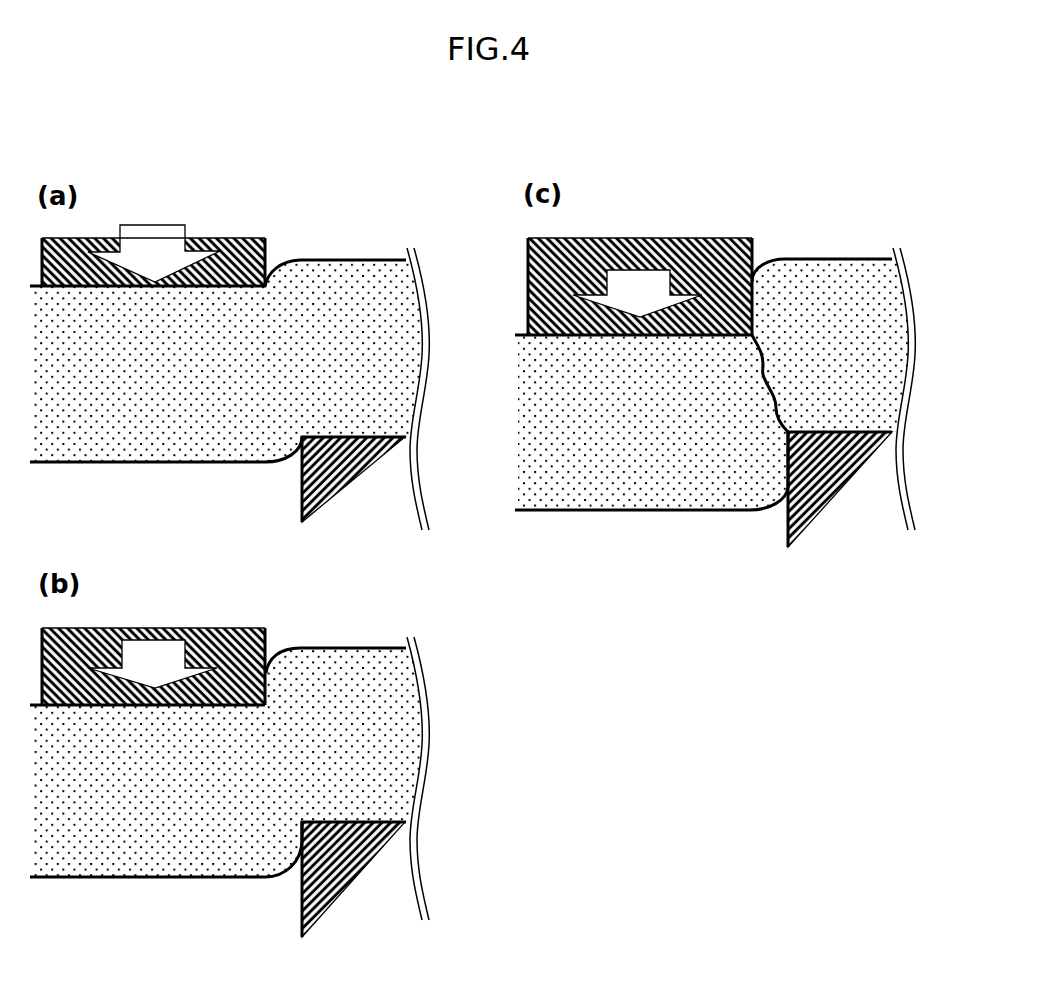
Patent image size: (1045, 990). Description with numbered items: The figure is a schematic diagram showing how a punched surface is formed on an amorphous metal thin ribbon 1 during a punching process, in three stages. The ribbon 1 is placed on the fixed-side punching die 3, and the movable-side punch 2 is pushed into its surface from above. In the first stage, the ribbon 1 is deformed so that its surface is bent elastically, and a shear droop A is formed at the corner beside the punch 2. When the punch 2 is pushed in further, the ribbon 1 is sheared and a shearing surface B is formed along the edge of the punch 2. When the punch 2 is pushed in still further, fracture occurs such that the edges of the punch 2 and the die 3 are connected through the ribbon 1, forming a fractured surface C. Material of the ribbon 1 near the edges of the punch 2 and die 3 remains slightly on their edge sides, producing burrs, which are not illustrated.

The amorphous metal thin ribbon 1 is at (388, 342).
The punching die (punch) on the movable side 2 is at (233, 245).
The punching die (die) on the fixed side 3 is at (353, 460).
The shear droop A is at (277, 273).
The shearing surface B is at (268, 697).
The fractured surface C is at (773, 379).